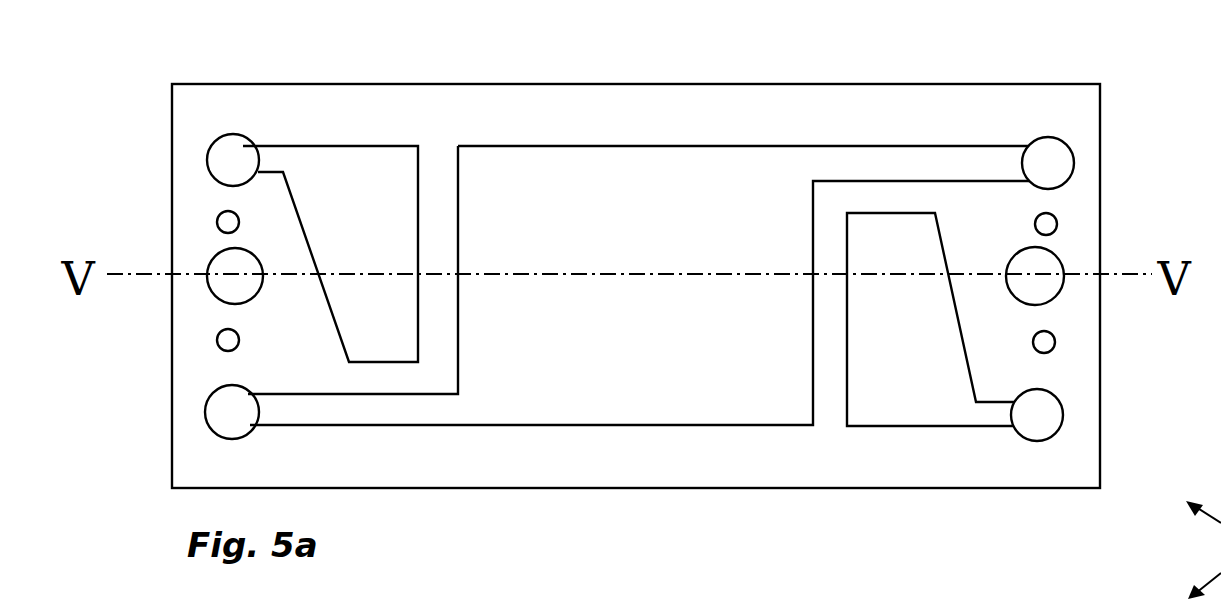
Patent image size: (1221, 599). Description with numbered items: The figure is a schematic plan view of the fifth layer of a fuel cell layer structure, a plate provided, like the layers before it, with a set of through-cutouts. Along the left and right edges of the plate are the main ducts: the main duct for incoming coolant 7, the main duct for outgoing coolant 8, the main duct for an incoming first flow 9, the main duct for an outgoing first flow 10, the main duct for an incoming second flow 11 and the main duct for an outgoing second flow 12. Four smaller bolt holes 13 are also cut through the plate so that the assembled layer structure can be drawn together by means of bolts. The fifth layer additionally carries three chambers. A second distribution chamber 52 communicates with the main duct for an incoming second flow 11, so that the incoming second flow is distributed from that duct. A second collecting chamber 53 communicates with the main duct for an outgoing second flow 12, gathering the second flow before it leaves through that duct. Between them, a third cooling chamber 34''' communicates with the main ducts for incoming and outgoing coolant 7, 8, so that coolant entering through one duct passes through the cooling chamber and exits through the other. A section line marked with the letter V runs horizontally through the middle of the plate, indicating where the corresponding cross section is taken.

The main duct for incoming coolant 7 is at (1052, 160).
The main duct for outgoing coolant 8 is at (232, 413).
The main duct for an incoming first flow 9 is at (1047, 273).
The main duct for an outgoing first flow 10 is at (232, 275).
The main duct for an incoming second flow 11 is at (1037, 415).
The main duct for an outgoing second flow 12 is at (233, 158).
The bolt holes 13 is at (1048, 222).
The third cooling chamber 34''' is at (636, 263).
The second distribution chamber 52 is at (876, 388).
The second collecting chamber 53 is at (371, 197).